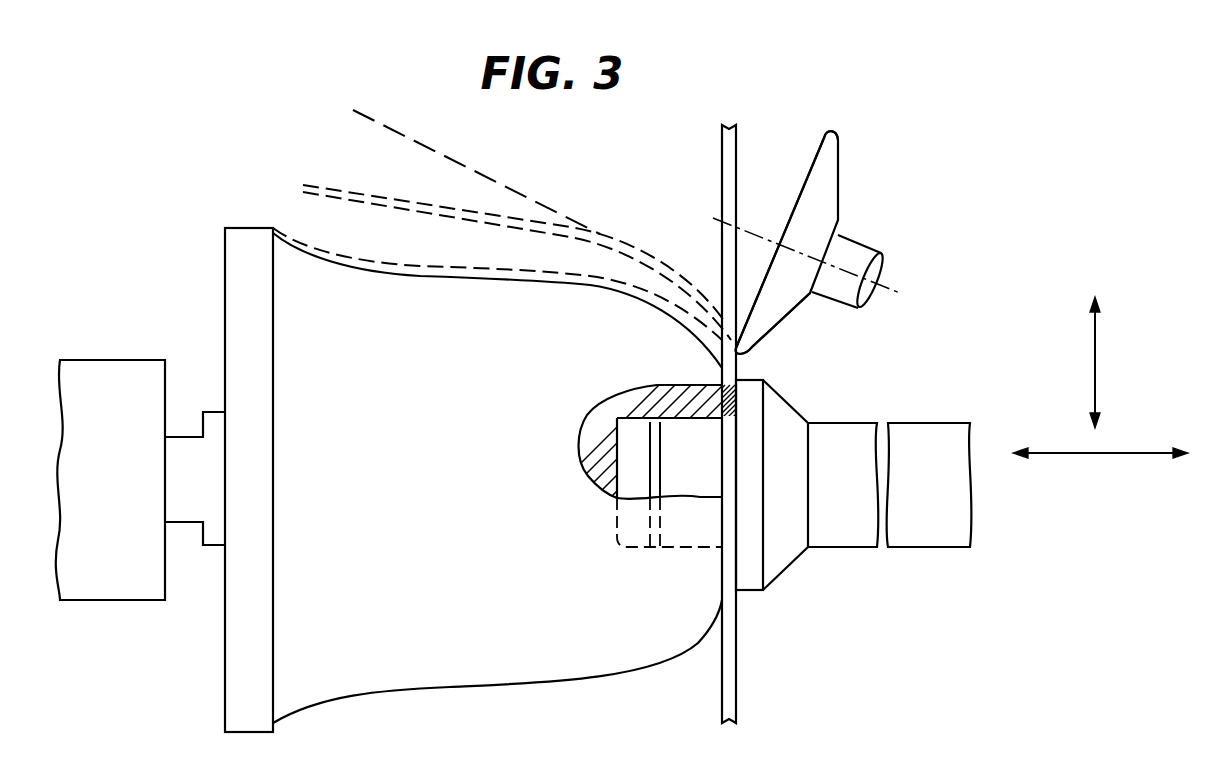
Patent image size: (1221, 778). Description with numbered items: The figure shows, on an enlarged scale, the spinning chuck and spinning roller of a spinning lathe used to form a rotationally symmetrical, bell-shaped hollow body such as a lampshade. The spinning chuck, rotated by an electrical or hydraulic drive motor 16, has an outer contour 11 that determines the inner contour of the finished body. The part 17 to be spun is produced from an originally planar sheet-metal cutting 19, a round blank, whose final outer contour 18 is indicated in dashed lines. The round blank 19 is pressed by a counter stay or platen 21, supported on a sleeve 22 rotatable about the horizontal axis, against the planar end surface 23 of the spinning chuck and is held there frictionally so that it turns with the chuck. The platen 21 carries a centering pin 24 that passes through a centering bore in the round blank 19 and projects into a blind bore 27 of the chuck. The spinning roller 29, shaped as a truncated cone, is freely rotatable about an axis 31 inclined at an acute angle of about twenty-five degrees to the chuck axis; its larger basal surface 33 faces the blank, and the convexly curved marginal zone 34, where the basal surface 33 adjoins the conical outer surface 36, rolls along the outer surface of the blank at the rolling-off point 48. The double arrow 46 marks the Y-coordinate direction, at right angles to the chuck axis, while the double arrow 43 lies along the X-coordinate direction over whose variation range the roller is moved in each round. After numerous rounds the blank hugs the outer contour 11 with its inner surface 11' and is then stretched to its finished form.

The outer contour of the spinning chuck 11 is at (473, 480).
The inner surface of the spinning blank 11' is at (517, 225).
The drive motor 16 is at (140, 585).
The spinning blank 17 is at (460, 274).
The final outer contour 18 is at (410, 264).
The round blank 19 is at (737, 657).
The counter stay 21 is at (787, 540).
The sleeve 22 is at (937, 525).
The planar end surface 23 is at (717, 413).
The centering pin 24 is at (673, 490).
The blind bore 27 is at (630, 442).
The spinning roller 29 is at (833, 186).
The axis of the spinning roller 31 is at (890, 286).
The basal surface 33 is at (797, 206).
The convexly curved marginal zone 34 is at (828, 136).
The conical outer surface 36 is at (785, 326).
The X-axis feed direction 43 is at (1120, 455).
The double arrow marking the Y-coordinate direction 46 is at (1098, 383).
The rolling-off point 48 is at (752, 354).